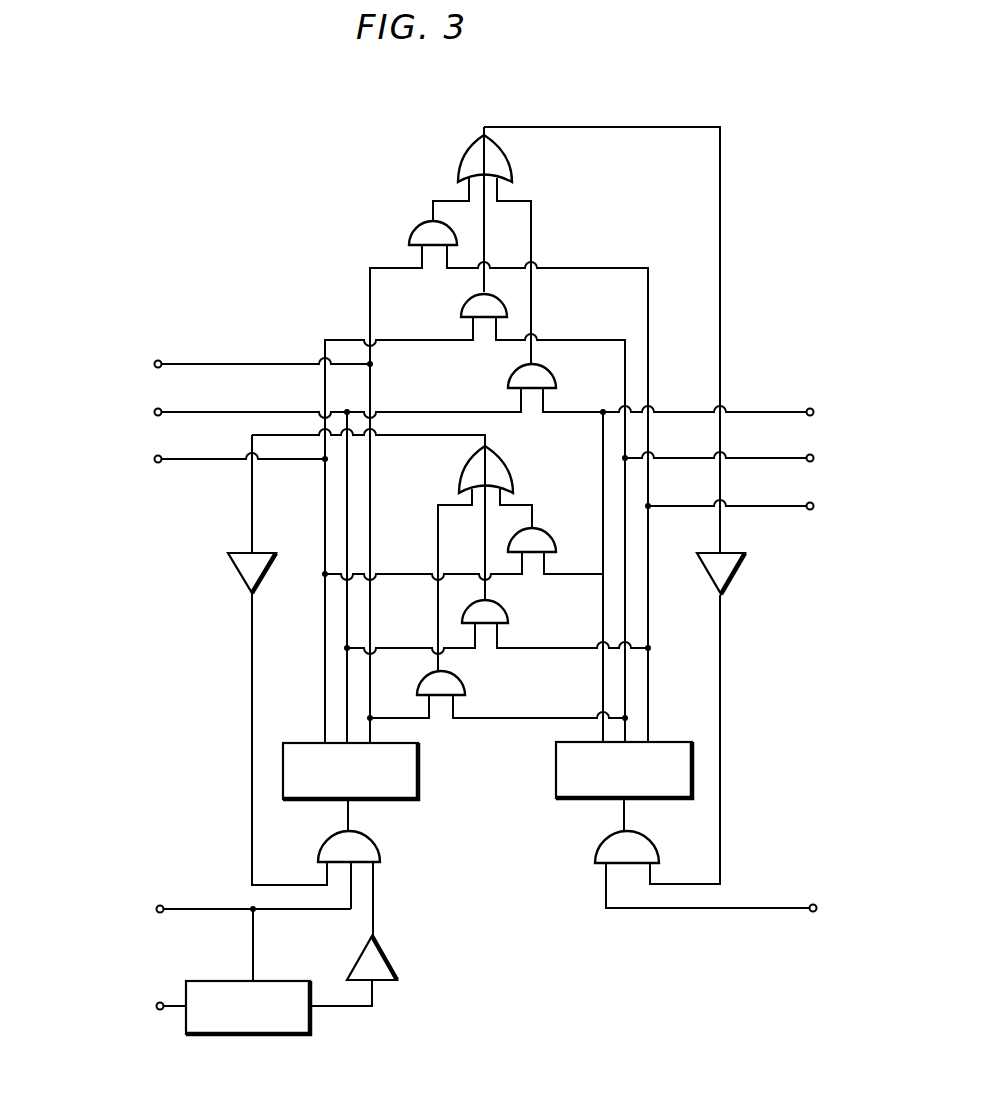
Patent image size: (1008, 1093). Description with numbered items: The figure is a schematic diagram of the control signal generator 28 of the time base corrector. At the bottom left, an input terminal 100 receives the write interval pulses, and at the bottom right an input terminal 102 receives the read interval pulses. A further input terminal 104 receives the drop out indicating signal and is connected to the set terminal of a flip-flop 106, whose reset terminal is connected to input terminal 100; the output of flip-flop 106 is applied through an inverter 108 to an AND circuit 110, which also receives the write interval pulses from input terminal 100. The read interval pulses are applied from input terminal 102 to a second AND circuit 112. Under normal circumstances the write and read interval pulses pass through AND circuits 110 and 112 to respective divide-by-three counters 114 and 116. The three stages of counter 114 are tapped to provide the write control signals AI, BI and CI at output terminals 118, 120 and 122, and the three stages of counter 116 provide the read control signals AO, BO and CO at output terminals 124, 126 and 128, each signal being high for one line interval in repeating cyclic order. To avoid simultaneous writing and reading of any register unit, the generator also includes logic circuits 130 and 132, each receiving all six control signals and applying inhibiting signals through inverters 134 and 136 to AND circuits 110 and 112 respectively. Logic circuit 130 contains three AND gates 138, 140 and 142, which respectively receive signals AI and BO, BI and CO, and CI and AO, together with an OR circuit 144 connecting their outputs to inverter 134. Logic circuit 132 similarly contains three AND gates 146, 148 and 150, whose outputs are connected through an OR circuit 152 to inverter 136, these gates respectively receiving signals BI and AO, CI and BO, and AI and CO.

The control signal generator 28 is at (524, 946).
The input terminal 100 is at (163, 906).
The input terminal 102 is at (812, 912).
The input terminal 104 is at (163, 1002).
The flip-flop 106 is at (263, 1036).
The inverter 108 is at (392, 963).
The AND circuit 110 is at (381, 850).
The AND circuit 112 is at (599, 848).
The divide-by-three counter 114 is at (418, 790).
The divide-by-three counter 116 is at (584, 798).
The output terminal 118 is at (153, 364).
The output terminal 120 is at (153, 412).
The output terminal 122 is at (153, 459).
The output terminal 124 is at (814, 412).
The output terminal 126 is at (814, 458).
The output terminal 128 is at (814, 506).
The logic circuit 130 is at (573, 487).
The logic circuit 132 is at (575, 190).
The inverter 134 is at (234, 558).
The inverter 136 is at (740, 573).
The AND gate 138 is at (464, 687).
The AND gate 140 is at (509, 613).
The AND gate 142 is at (548, 538).
The OR circuit 144 is at (459, 474).
The AND gate 146 is at (513, 375).
The AND gate 148 is at (466, 306).
The AND gate 150 is at (419, 230).
The OR circuit 152 is at (459, 166).